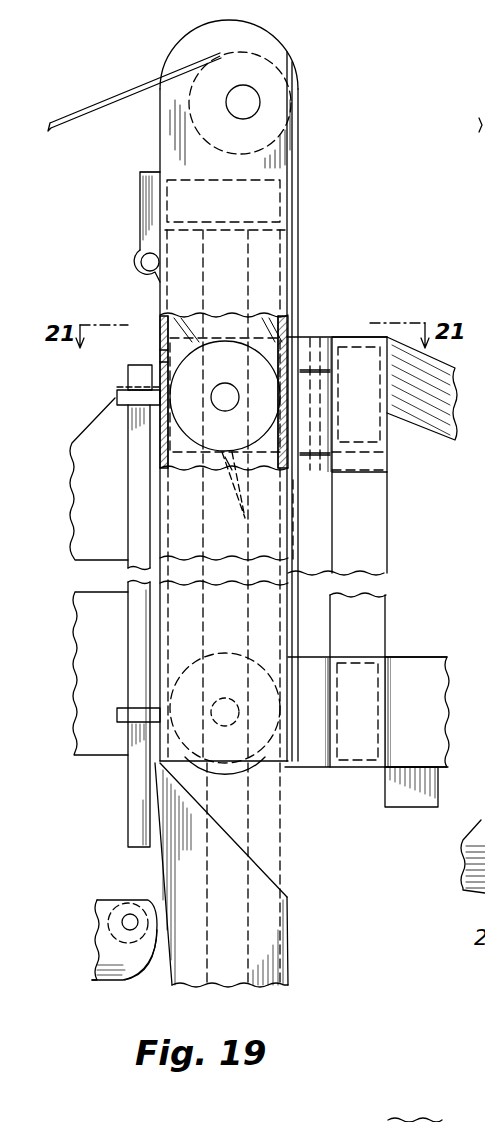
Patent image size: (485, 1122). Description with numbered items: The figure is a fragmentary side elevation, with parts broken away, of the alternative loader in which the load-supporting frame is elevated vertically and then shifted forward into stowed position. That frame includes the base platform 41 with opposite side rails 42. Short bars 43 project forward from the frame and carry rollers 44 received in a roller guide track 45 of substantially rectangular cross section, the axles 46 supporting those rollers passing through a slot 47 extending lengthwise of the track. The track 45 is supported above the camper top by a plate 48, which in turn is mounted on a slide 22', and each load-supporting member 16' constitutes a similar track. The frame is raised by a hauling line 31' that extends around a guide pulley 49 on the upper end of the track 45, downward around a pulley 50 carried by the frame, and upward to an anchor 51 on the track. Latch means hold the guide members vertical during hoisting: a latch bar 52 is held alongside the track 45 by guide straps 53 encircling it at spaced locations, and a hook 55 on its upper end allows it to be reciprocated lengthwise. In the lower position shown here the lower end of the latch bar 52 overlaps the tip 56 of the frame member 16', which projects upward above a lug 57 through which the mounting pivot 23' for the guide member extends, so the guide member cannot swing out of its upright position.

The load-supporting member 16' is at (249, 875).
The slide 22' is at (103, 935).
The mounting pivot 23' is at (135, 901).
The hauling line 31' is at (134, 102).
The base platform 41 is at (418, 668).
The side rail 42 is at (433, 420).
The short bar 43 is at (335, 337).
The roller 44 is at (262, 360).
The roller guide track 45 is at (187, 285).
The axle 46 is at (227, 383).
The slot 47 is at (246, 328).
The plate 48 is at (92, 427).
The guide pulley 49 is at (293, 97).
The pulley 50 is at (335, 505).
The anchor 51 is at (141, 262).
The latch bar 52 is at (130, 777).
The guide strap 53 is at (117, 393).
The hook 55 is at (162, 358).
The tip 56 is at (197, 805).
The lug 57 is at (150, 964).